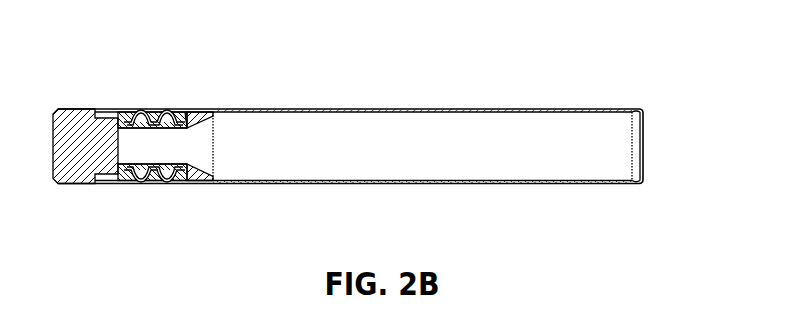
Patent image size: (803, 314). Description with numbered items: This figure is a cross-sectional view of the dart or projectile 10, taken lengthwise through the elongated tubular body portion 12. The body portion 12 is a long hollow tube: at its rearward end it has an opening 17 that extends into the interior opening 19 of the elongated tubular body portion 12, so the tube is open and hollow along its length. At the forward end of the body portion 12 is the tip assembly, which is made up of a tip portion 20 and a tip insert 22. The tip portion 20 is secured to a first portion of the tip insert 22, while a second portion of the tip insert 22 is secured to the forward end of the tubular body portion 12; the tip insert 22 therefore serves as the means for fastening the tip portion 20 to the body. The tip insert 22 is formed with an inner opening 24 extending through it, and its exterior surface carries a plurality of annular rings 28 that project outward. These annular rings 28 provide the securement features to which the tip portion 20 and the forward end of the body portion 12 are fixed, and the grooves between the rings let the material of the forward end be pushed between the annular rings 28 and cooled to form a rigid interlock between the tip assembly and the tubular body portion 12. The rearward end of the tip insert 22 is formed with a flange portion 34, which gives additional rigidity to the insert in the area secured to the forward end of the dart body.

The dart or projectile 10 is at (458, 92).
The elongated tubular body portion 12 is at (325, 108).
The opening 17 is at (643, 167).
The opening 19 is at (368, 152).
The tip portion 20 is at (75, 110).
The tip insert 22 is at (190, 110).
The inner opening 24 is at (162, 156).
The annular rings 28 is at (165, 110).
The flange portion 34 is at (197, 110).